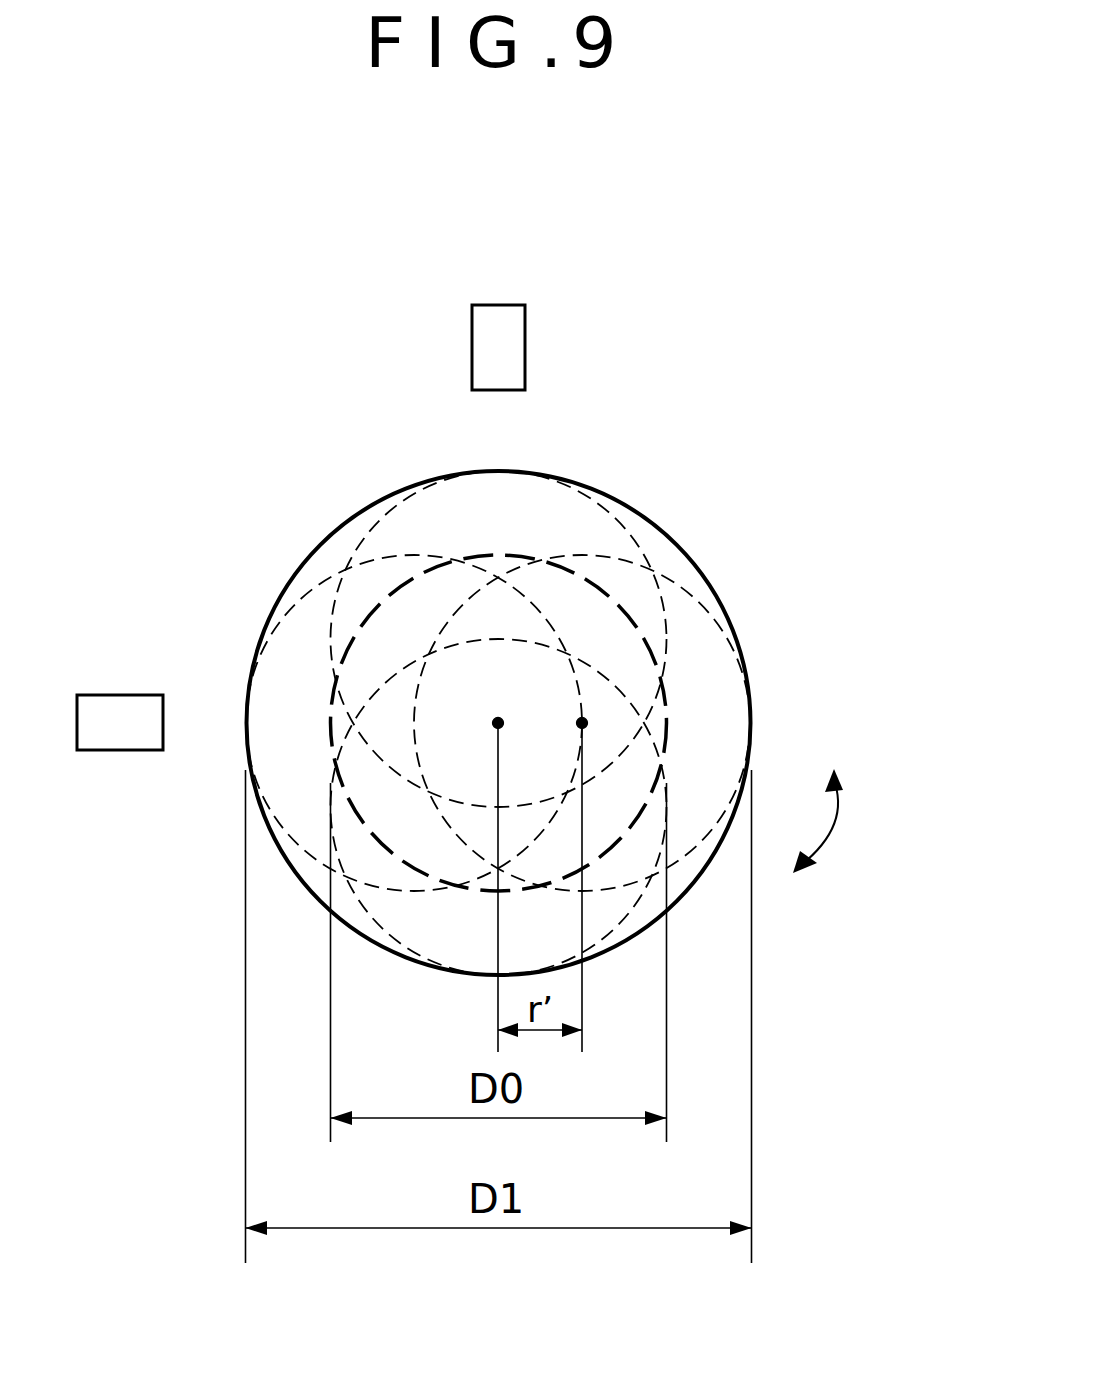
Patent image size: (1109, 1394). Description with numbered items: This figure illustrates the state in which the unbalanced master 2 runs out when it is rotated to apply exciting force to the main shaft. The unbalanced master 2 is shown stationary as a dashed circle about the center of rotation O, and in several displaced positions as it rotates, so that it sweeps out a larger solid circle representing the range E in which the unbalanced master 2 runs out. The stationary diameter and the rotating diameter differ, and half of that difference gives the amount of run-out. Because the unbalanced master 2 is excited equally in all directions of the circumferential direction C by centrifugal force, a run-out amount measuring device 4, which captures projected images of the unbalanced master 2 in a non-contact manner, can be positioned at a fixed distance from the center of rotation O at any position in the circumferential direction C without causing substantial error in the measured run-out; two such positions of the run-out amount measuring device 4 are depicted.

The unbalanced master 2 is at (560, 637).
The run-out amount measuring device 4 is at (502, 350).
The center of rotation O is at (498, 723).
The range in which the unbalanced master runs out E is at (717, 717).
The circumferential direction C is at (826, 821).